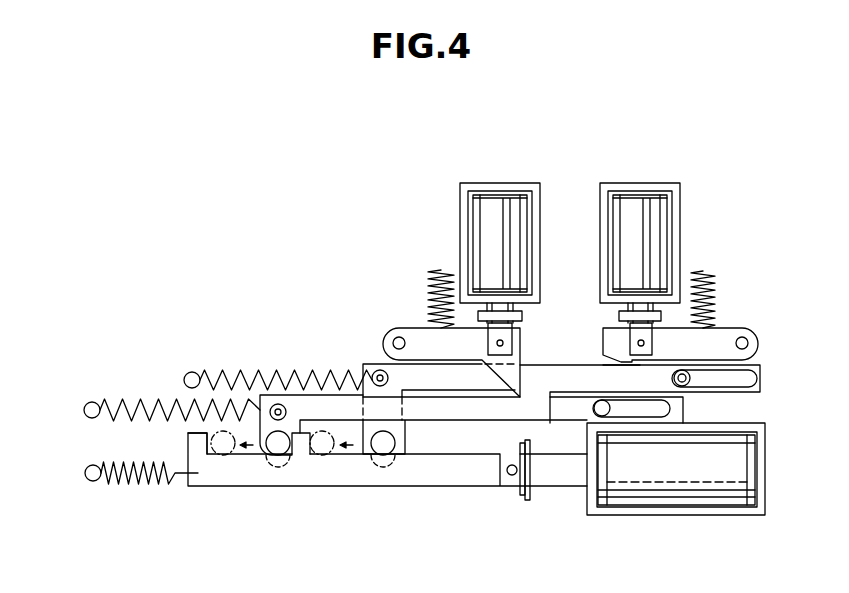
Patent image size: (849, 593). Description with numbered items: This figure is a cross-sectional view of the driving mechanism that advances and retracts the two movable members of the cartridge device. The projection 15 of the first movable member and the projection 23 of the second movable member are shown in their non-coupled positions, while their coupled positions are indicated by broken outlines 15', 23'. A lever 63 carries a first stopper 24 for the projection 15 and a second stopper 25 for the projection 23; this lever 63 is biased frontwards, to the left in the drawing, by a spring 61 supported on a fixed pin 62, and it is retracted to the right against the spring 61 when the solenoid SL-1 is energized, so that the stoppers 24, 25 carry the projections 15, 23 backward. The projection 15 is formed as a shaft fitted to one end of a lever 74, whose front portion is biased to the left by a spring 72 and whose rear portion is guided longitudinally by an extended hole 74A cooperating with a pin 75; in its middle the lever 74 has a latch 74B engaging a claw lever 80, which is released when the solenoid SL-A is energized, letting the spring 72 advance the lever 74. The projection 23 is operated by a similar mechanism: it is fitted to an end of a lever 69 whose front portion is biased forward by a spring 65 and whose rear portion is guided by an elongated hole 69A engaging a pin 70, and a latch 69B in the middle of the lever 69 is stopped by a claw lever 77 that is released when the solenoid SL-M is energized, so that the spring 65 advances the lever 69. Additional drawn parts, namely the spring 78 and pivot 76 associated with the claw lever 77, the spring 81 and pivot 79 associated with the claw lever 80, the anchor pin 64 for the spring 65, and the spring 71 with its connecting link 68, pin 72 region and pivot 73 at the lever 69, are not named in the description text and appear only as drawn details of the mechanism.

The solenoid SL-M is at (496, 210).
The solenoid SL-A is at (645, 210).
The solenoid SL-1 is at (690, 490).
The spring 78 is at (441, 270).
The claw lever 77 is at (423, 338).
The pivot pin 76 is at (392, 336).
The spring 71 is at (186, 372).
The spring 72 is at (268, 372).
The link 68 is at (282, 403).
The pin 73 is at (373, 370).
The anchor pin 64 is at (91, 401).
The spring 65 is at (150, 400).
The latch 74B is at (620, 352).
The latch 69B is at (535, 398).
The spring 81 is at (710, 273).
The claw lever 80 is at (684, 376).
The pin 75 is at (690, 348).
The pivot pin 79 is at (749, 340).
The extended hole 74A is at (745, 378).
The lever 74 is at (567, 385).
The pin 70 is at (687, 402).
The elongated hole 69A is at (688, 412).
The lever 69 is at (486, 415).
The lever 63 is at (447, 468).
The second stopper 25 is at (195, 450).
The first stopper 24 is at (300, 452).
The coupled position of projection 23 23' is at (227, 486).
The projection of the second movable member 23 is at (267, 486).
The coupled position of projection 15 15' is at (332, 486).
The projection of the first movable member 15 is at (380, 486).
The fixed pin 62 is at (88, 482).
The spring 61 is at (152, 485).